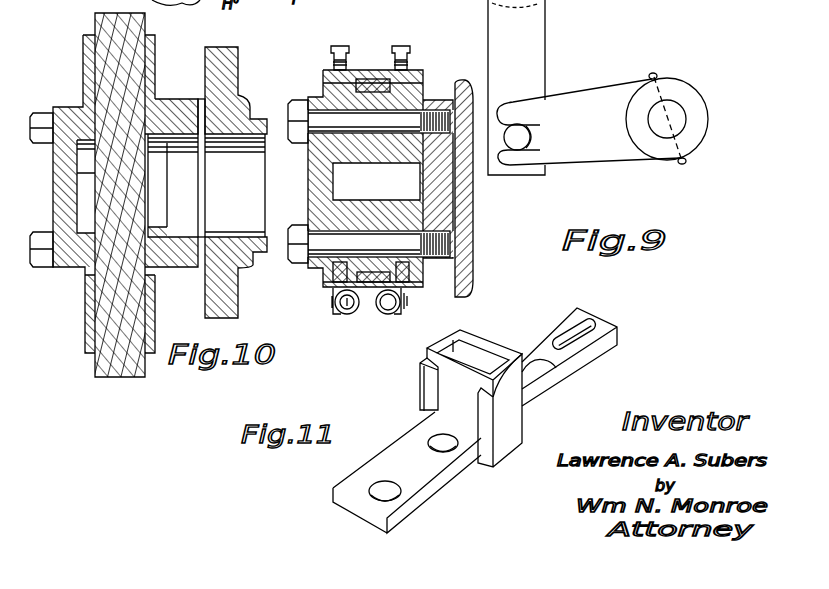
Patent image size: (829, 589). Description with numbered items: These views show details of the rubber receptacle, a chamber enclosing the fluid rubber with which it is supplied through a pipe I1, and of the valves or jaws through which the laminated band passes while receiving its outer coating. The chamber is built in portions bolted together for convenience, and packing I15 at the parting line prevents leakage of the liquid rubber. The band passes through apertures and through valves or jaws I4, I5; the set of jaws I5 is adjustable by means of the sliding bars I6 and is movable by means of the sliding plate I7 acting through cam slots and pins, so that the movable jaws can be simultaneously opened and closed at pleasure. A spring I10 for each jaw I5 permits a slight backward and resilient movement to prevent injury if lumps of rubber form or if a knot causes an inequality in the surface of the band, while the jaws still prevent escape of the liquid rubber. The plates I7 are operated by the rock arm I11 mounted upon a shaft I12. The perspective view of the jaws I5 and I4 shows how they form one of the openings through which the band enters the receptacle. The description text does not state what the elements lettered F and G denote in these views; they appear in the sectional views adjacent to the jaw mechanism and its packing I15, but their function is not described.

In FIG. 10, the flexible shaft / screw F is at (92, 367).
In FIG. 10, the frame plate G is at (242, 97).
In FIG. 10, the pipe I1 is at (271, 100).
In FIG. 10, the jaws I5 is at (365, 72).
In FIG. 11, the jaws I5 is at (472, 336).
In FIG. 10, the sliding bars I6 is at (412, 60).
In FIG. 10, the spring I10 is at (350, 317).
In FIG. 10, the packing I15 is at (195, 99).
In FIG. 9, the sliding plate I7 is at (576, 71).
In FIG. 9, the rock arm I11 is at (604, 146).
In FIG. 9, the shaft I12 is at (684, 110).
In FIG. 11, the valves or jaws I4 is at (410, 436).